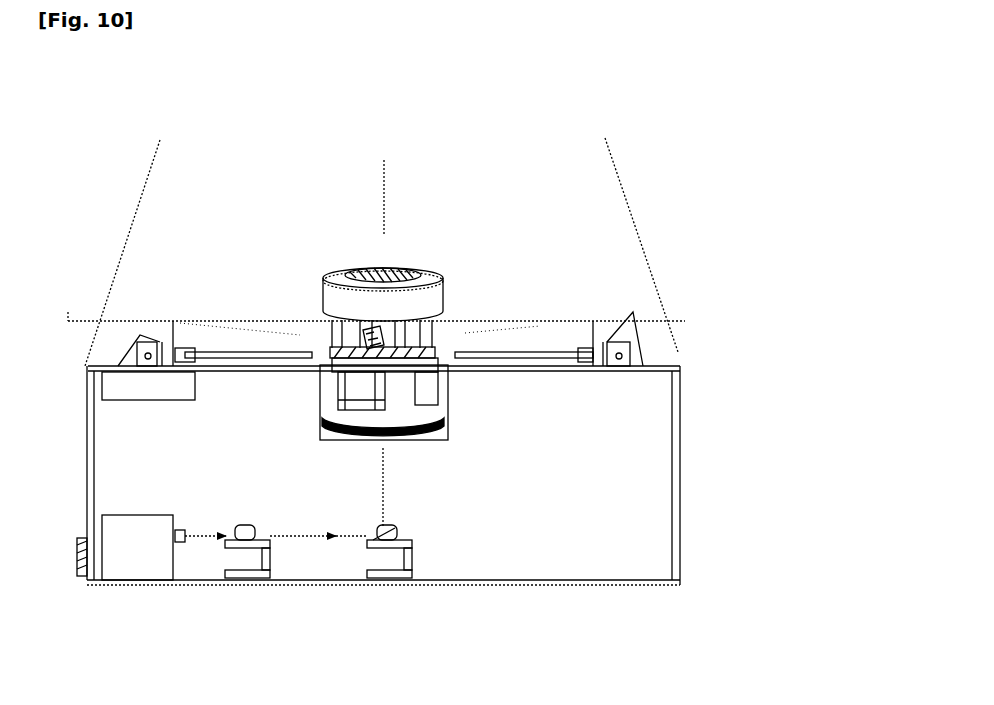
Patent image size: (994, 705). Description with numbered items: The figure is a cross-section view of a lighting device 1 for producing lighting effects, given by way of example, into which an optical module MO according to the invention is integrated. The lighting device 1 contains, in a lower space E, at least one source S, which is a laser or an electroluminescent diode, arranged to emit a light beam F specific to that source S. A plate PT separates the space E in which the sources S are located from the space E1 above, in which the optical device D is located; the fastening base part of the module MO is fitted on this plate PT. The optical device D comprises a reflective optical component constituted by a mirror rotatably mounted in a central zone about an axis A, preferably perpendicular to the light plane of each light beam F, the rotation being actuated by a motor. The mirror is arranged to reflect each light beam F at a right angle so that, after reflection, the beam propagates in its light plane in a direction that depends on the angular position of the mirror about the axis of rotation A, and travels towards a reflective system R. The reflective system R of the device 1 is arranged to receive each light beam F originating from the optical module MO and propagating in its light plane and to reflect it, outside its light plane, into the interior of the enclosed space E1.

The lighting device 1 is at (746, 257).
The plate PT is at (143, 172).
The space E1 is at (568, 175).
The axis A is at (384, 176).
The module MO is at (430, 264).
The optical device D is at (384, 339).
The reflective system R is at (143, 313).
The source S is at (145, 545).
The light beam F is at (387, 478).
The space E is at (625, 547).